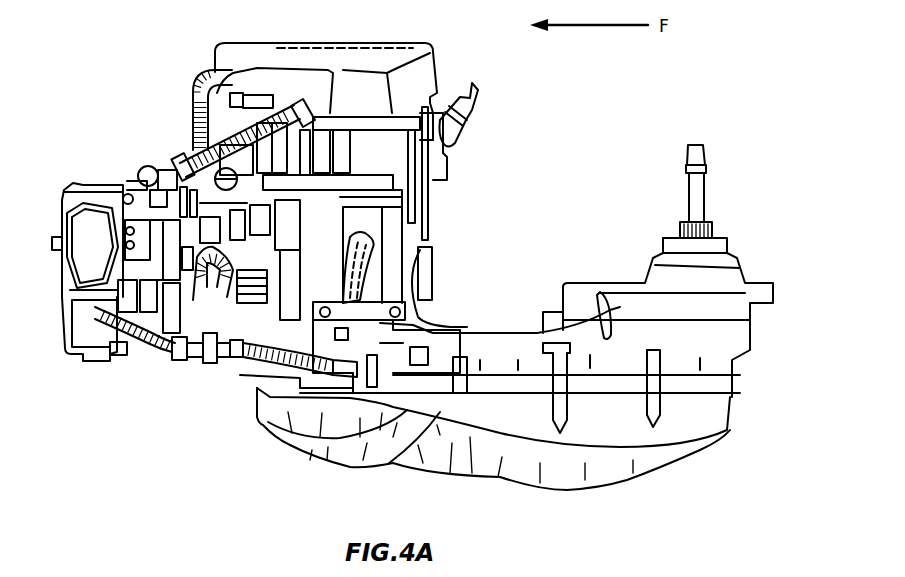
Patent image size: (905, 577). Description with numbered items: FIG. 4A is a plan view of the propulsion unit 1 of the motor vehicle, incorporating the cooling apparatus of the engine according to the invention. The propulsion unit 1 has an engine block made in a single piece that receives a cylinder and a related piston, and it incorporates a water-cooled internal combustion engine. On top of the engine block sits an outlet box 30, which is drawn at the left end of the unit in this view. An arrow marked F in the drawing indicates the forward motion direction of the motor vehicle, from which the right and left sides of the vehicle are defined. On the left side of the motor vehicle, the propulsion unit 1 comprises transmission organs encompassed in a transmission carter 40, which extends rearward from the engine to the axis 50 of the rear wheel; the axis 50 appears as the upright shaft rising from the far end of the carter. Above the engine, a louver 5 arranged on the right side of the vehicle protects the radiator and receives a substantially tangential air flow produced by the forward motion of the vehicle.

The propulsion unit 1 is at (147, 420).
The louver 5 is at (368, 63).
The outlet box 30 is at (90, 237).
The transmission carter 40 is at (310, 450).
The axis 50 is at (697, 187).